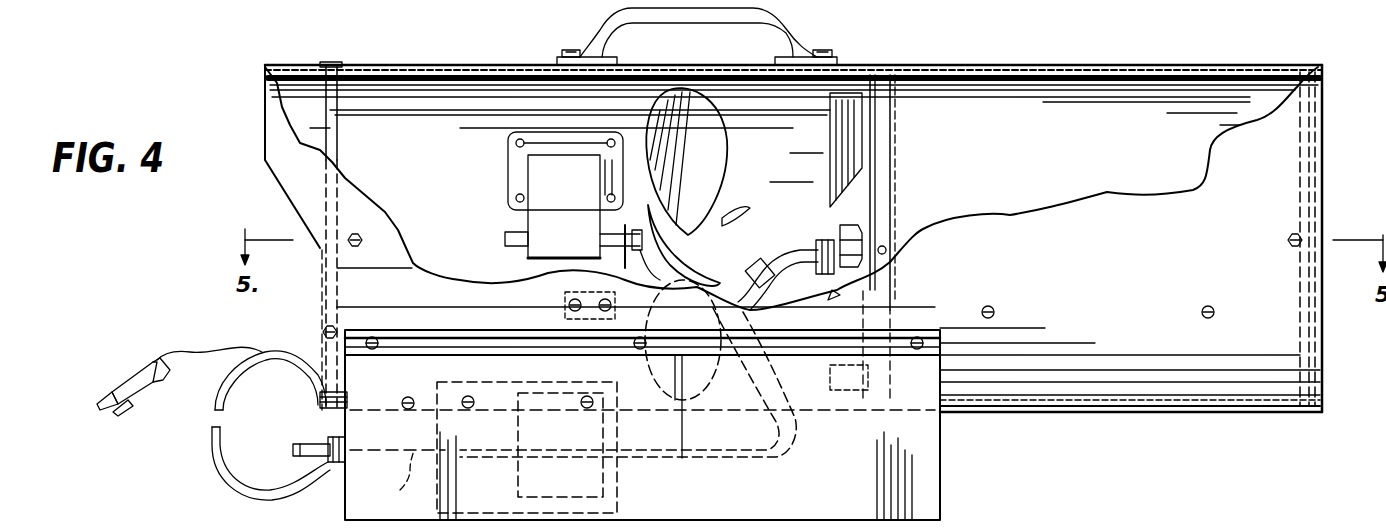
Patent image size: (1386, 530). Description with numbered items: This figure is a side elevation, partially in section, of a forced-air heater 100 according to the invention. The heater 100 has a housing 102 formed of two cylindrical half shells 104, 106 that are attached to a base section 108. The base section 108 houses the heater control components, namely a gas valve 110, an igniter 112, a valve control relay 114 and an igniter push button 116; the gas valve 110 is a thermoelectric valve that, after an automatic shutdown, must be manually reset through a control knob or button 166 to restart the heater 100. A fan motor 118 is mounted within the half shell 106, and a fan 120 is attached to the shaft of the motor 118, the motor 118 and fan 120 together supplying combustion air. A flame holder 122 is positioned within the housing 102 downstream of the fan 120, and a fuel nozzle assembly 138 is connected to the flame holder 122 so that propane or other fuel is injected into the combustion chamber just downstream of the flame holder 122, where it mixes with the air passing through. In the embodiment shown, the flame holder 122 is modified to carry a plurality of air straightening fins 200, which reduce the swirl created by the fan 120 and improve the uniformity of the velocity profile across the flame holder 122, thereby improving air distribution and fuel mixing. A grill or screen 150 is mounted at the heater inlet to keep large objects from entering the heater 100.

The forced-air heater 100 is at (1118, 436).
The housing 102 is at (1156, 284).
The cylindrical half shell 104 is at (1243, 215).
The cylindrical half shell 106 is at (1268, 387).
The base section 108 is at (928, 485).
The gas valve 110 is at (400, 491).
The igniter 112 is at (546, 430).
The valve control relay 114 is at (489, 388).
The igniter push button 116 is at (329, 443).
The fan motor 118 is at (522, 190).
The fan 120 is at (708, 158).
The flame holder 122 is at (890, 198).
The fuel nozzle assembly 138 is at (826, 244).
The grill or screen 150 is at (338, 148).
The control knob or button 166 is at (300, 446).
The air straightening fins 200 is at (873, 200).